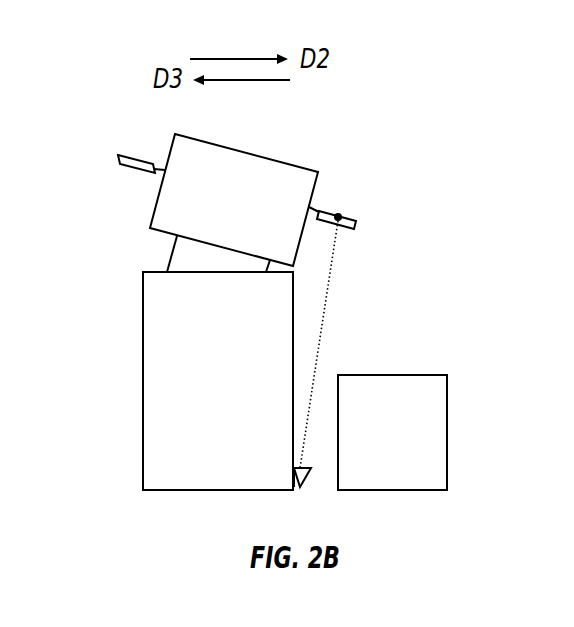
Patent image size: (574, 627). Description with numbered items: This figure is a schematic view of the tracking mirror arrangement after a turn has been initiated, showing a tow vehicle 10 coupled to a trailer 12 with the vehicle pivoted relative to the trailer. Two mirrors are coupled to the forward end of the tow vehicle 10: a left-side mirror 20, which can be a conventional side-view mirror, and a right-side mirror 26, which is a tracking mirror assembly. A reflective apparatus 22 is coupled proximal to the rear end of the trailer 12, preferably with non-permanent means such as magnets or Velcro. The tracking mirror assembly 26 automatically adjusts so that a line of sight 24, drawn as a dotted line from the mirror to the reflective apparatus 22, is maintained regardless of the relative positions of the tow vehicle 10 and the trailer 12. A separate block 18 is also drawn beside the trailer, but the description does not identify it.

The tow vehicle 10 is at (219, 215).
The trailer 12 is at (205, 398).
The target / reference member 18 is at (408, 446).
The left-side mirror 20 is at (121, 148).
The reflective apparatus 22 is at (327, 497).
The line of sight 24 is at (340, 344).
The right-side mirror (tracking mirror assembly) 26 is at (347, 200).